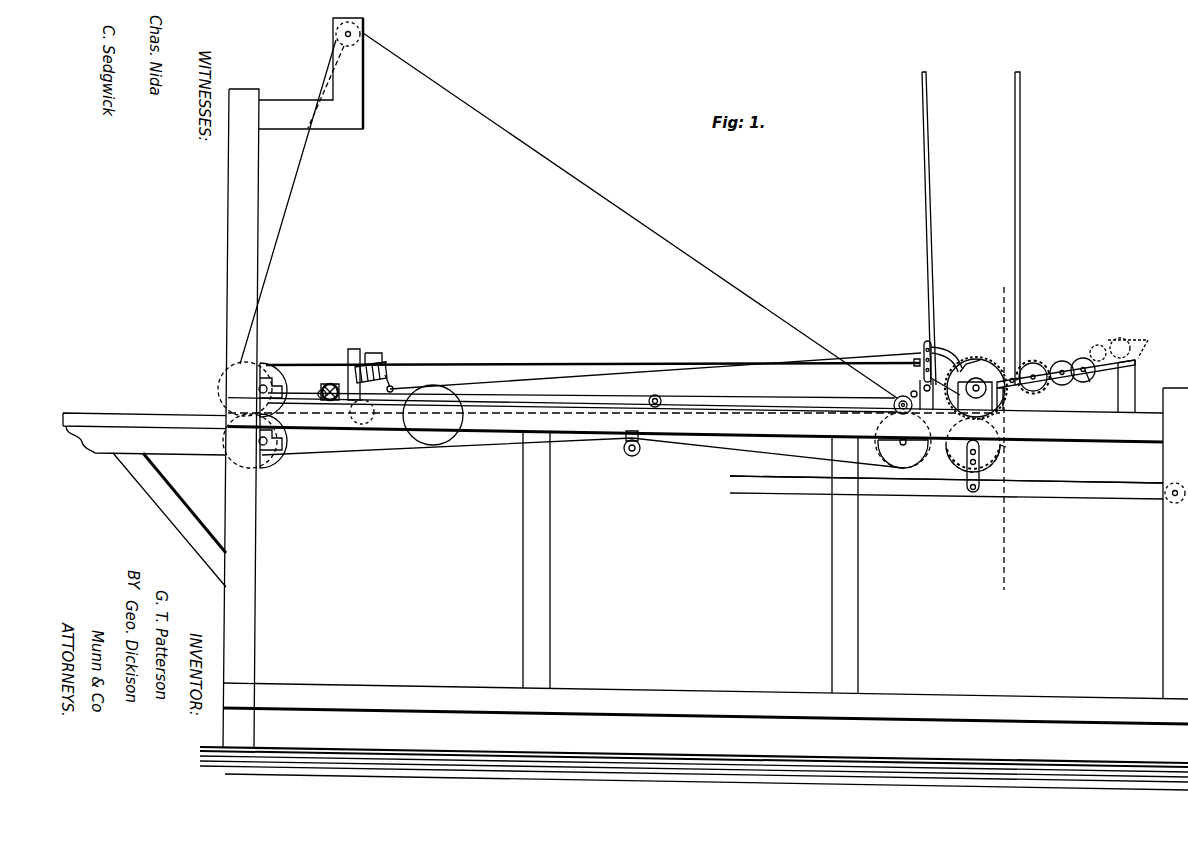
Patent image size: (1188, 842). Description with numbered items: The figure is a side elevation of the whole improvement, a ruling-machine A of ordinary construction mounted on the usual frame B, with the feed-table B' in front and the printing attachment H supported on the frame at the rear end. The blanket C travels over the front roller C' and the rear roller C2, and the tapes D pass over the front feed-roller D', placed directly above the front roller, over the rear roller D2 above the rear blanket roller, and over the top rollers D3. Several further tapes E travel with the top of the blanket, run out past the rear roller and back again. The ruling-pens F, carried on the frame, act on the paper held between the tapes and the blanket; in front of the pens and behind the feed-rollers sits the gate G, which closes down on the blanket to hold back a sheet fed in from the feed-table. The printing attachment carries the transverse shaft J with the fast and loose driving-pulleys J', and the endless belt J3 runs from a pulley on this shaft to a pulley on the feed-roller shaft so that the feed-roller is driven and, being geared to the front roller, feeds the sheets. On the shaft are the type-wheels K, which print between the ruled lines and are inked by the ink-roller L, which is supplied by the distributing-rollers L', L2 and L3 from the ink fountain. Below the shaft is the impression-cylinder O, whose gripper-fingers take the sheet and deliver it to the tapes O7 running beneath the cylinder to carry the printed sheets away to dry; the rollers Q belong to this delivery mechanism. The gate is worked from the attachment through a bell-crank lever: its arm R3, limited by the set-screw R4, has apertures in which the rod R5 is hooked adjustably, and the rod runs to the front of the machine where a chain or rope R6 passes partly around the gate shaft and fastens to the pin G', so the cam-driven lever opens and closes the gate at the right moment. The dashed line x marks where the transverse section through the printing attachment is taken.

The ruling-machine A is at (694, 540).
The frame B is at (540, 418).
The feed-table B' is at (144, 484).
The blanket C is at (582, 463).
The front roller C' is at (268, 441).
The rear roller C2 is at (902, 463).
The tapes D is at (288, 202).
The front feed-roller D' is at (257, 375).
The rear roller D2 is at (890, 402).
The top rollers D3 is at (366, 32).
The tapes E is at (965, 455).
The ruling-pens F is at (380, 358).
The gate G is at (385, 393).
The pin G' is at (311, 386).
The printing attachment H is at (971, 228).
The transverse shaft J is at (976, 388).
The fast and loose driving-pulleys J' is at (972, 352).
The endless belt J3 is at (490, 358).
The type-wheels K is at (1066, 378).
The ink-roller L is at (1047, 360).
The distributing-roller L' is at (1036, 364).
The distributing-roller L2 is at (1068, 366).
The distributing-roller L3 is at (1090, 382).
The impression-cylinder O is at (1007, 447).
The tapes O7 is at (1097, 482).
The rollers Q is at (957, 352).
The arm R3 is at (925, 340).
The set-screw R4 is at (911, 393).
The rod R5 is at (872, 352).
The chain or rope R6 is at (352, 350).
The section line x is at (999, 433).